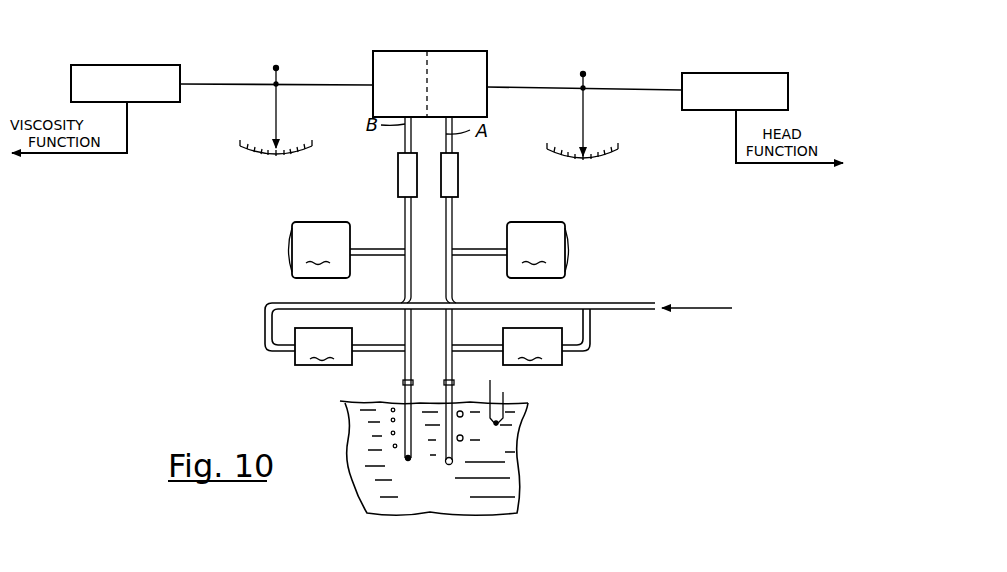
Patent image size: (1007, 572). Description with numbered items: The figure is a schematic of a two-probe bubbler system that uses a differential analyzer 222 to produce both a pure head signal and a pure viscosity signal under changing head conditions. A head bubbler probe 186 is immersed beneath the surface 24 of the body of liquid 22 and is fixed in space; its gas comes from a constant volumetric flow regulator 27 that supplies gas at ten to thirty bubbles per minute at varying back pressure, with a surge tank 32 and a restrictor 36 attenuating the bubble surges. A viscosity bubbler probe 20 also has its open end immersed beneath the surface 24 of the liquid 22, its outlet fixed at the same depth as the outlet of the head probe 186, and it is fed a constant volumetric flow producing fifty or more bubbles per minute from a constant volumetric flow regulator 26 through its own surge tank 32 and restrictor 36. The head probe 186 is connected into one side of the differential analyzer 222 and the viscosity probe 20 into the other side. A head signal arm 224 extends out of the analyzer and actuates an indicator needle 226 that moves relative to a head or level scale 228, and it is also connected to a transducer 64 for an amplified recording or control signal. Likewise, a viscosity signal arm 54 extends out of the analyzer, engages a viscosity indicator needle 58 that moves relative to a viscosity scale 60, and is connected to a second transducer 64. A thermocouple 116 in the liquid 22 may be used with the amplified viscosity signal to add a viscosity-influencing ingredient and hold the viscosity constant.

The transducer 64 is at (107, 65).
The viscosity signal arm 54 is at (216, 84).
The viscosity indicator needle 58 is at (276, 98).
The viscosity scale 60 is at (258, 145).
The differential analyzer 222 is at (373, 57).
The head signal arm 224 is at (611, 88).
The indicator needle 226 is at (587, 128).
The head or level scale 228 is at (612, 151).
The restrictor 36 is at (398, 163).
The surge tank 32 is at (429, 250).
The constant volumetric flow regulator 26 is at (323, 346).
The constant volumetric flow regulator 27 is at (532, 346).
The viscosity bubbler probe 20 is at (396, 405).
The surface 24 is at (520, 405).
The body of liquid 22 is at (405, 499).
The thermocouple 116 is at (497, 420).
The head bubbler probe 186 is at (452, 430).